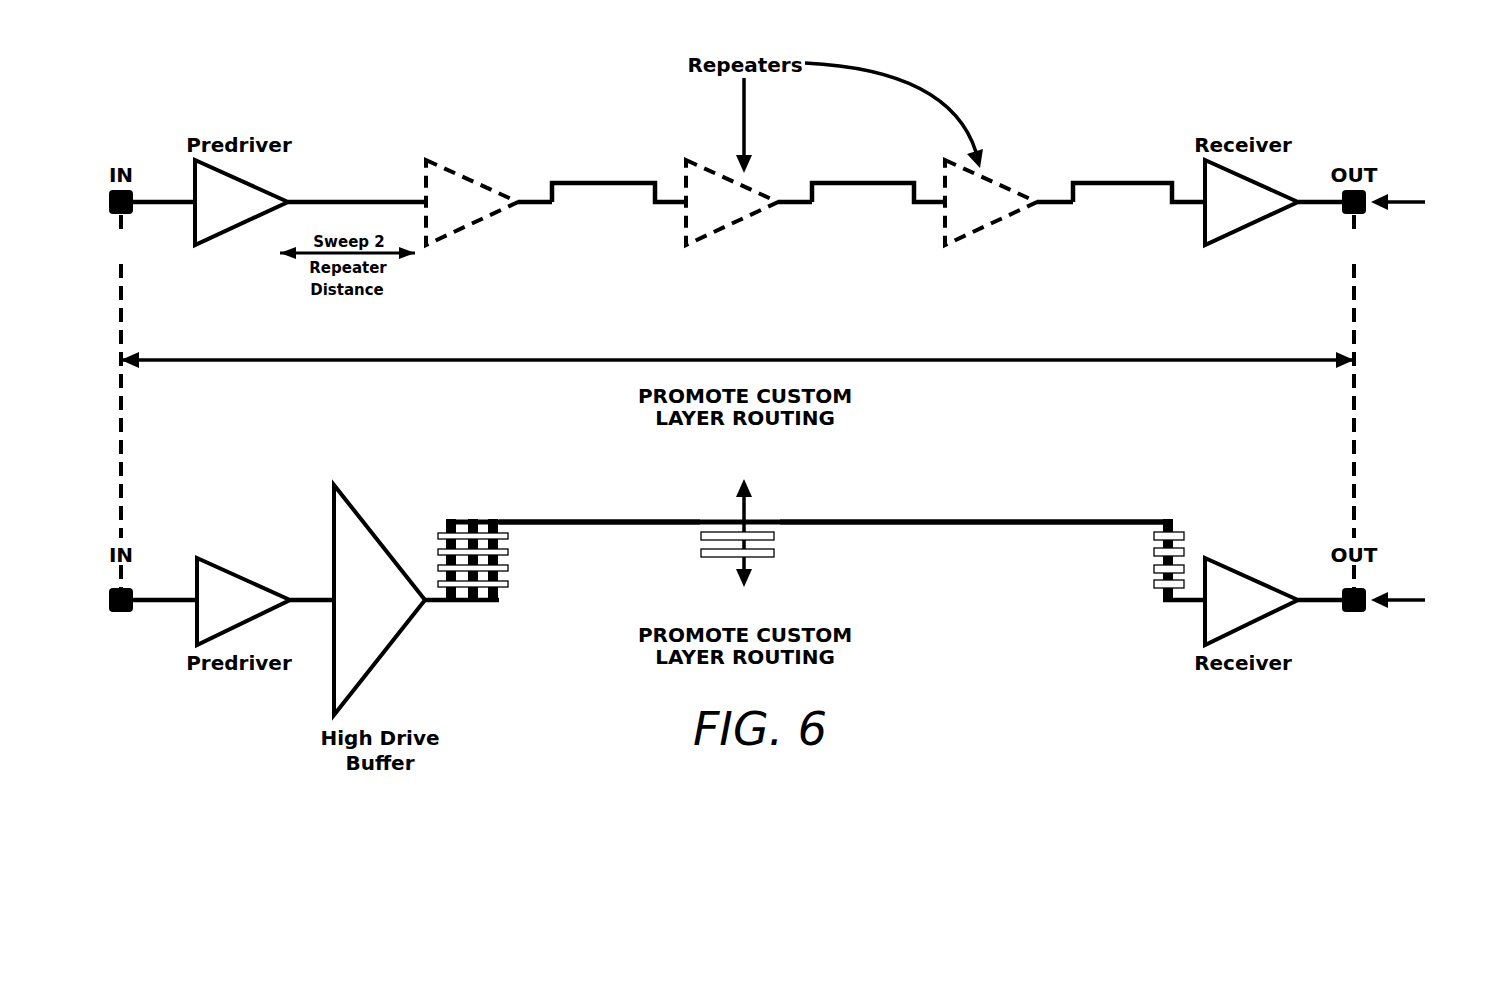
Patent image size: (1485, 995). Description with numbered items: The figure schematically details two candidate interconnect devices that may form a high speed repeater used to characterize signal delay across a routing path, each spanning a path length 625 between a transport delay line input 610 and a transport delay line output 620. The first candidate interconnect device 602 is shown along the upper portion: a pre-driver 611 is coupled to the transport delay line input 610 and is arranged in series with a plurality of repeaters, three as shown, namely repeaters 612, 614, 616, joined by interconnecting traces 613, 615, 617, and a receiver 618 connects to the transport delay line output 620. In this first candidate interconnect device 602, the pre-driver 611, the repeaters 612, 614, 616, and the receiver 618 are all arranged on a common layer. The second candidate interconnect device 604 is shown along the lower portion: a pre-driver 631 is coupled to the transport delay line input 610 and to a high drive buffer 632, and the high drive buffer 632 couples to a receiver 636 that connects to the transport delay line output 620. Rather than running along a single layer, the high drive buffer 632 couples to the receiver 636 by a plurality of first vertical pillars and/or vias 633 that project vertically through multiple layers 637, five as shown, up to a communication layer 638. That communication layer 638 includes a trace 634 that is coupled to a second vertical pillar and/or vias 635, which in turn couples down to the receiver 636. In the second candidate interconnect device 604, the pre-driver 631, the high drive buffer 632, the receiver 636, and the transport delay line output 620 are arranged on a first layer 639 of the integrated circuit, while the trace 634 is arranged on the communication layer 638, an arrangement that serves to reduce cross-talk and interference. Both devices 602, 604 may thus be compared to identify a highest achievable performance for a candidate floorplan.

The first candidate interconnect device 602 is at (1470, 216).
The second candidate interconnect device 604 is at (1470, 616).
The transport delay line input 610 is at (140, 262).
The pre-driver 611 is at (247, 217).
The repeater 612 is at (476, 217).
The interconnecting trace 613 is at (627, 179).
The repeater 614 is at (736, 217).
The interconnecting trace 615 is at (885, 179).
The repeater 616 is at (995, 217).
The interconnecting trace 617 is at (1145, 179).
The receiver 618 is at (1255, 217).
The transport delay line output 620 is at (1376, 262).
The path length 625 is at (817, 356).
The pre-driver 631 is at (247, 615).
The high drive buffer 632 is at (389, 615).
The first vertical pillars and/or vias 633 is at (497, 516).
The trace 634 is at (764, 616).
The second vertical pillar and/or vias 635 is at (1190, 516).
The receiver 636 is at (1255, 615).
The multiple layers 637 is at (590, 566).
The communication layer 638 is at (868, 512).
The first layer 639 is at (1057, 566).